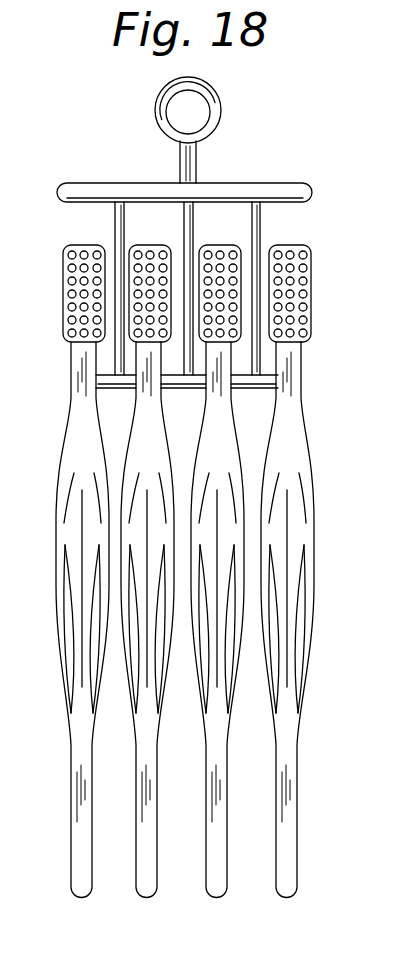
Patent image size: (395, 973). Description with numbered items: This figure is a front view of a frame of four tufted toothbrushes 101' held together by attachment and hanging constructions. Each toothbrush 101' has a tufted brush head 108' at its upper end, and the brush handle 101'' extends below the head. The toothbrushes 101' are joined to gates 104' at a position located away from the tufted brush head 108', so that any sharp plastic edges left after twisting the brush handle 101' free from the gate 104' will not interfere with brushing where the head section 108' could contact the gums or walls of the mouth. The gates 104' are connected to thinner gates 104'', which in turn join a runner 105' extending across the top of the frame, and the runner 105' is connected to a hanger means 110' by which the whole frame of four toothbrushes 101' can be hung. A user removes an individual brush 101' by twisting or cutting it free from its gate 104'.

The hanger means 110' is at (155, 130).
The runner 105' is at (184, 169).
The thinner gates 104'' is at (236, 288).
The tufted brush head 108' is at (224, 293).
The gate 104' is at (200, 396).
The toothbrush handle 101'' is at (324, 620).
The toothbrush 101' is at (221, 620).